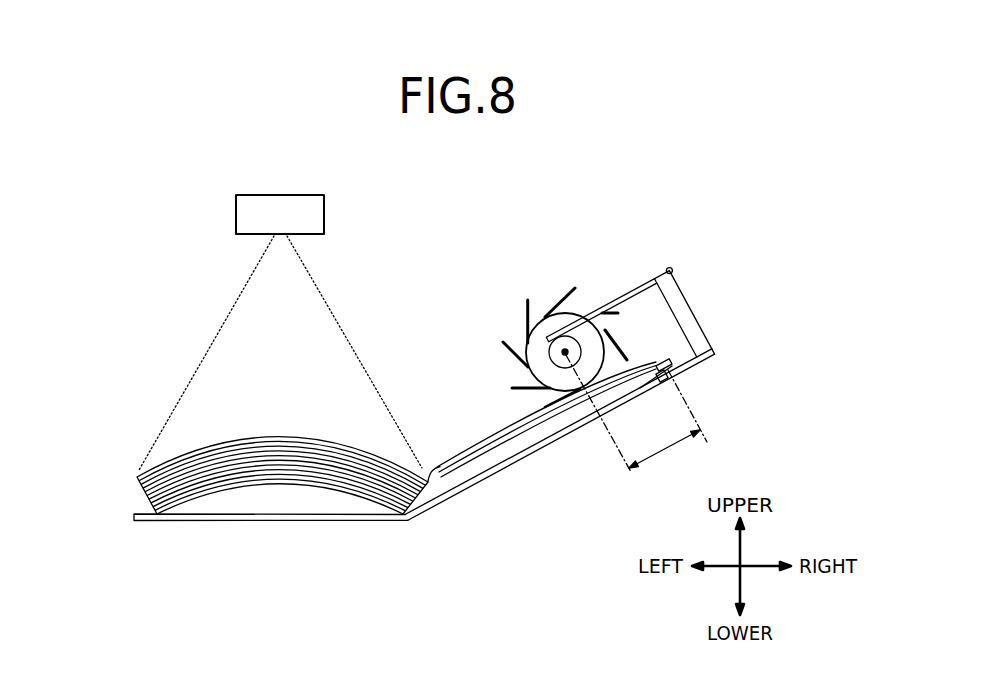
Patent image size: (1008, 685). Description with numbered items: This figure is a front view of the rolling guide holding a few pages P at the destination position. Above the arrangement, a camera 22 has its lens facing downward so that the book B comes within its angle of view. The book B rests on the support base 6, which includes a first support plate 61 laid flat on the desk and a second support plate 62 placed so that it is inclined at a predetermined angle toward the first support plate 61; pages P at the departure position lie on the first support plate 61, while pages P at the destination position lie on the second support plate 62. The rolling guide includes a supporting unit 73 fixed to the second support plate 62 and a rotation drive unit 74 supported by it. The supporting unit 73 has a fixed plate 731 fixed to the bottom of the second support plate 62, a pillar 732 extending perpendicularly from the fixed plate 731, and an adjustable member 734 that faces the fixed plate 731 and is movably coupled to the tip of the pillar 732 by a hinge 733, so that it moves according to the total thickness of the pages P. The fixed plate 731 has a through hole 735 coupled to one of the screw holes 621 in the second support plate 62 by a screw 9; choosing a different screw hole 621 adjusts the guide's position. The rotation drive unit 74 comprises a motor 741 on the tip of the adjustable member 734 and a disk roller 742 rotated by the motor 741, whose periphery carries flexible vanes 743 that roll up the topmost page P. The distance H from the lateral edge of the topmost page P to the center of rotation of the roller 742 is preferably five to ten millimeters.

The camera 22 is at (245, 217).
The support base 6 is at (424, 473).
The first support plate 61 is at (255, 520).
The second support plate 62 is at (522, 455).
The screw hole 621 is at (657, 365).
The supporting unit 73 is at (657, 325).
The fixed plate 731 is at (710, 353).
The pillar 732 is at (695, 330).
The hinge 733 is at (672, 268).
The adjustable member 734 is at (625, 293).
The through hole 735 is at (660, 378).
The rotation drive unit 74 is at (523, 311).
The motor 741 is at (553, 351).
The roller 742 is at (550, 380).
The vane 743 is at (505, 347).
The screw 9 is at (662, 382).
The page P is at (191, 449).
The book B is at (297, 427).
The distance H is at (636, 415).